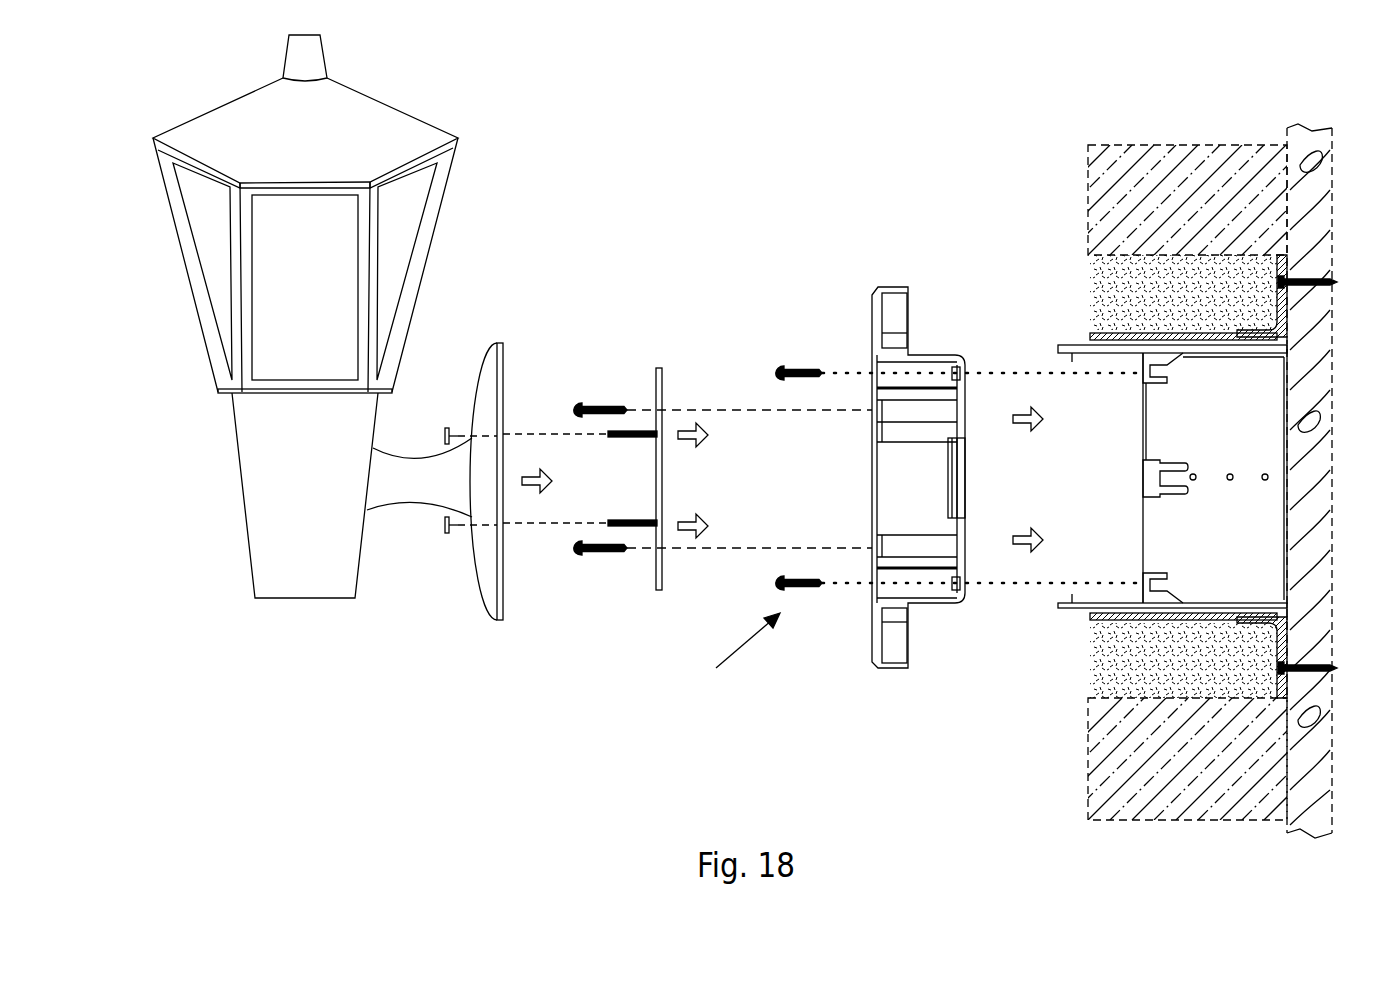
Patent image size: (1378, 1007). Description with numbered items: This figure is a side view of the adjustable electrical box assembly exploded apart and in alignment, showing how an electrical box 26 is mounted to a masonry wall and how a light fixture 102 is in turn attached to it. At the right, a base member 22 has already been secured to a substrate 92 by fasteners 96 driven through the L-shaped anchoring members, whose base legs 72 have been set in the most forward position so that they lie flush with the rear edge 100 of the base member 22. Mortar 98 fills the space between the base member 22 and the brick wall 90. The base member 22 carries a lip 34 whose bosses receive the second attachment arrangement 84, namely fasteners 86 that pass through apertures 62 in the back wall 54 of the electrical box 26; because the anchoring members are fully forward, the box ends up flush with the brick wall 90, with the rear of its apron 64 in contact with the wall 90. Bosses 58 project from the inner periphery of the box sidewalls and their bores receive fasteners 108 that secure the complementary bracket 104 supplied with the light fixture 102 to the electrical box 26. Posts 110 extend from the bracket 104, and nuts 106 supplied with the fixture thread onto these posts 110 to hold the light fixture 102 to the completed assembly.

The base member 22 is at (1172, 476).
The electrical box 26 is at (918, 416).
The lip 34 is at (1070, 353).
The back wall 54 is at (967, 553).
The bosses 58 is at (905, 547).
The apertures 62 is at (970, 372).
The apron 64 is at (895, 288).
The base leg 72 is at (1230, 613).
The second attachment arrangement 84 is at (736, 651).
The fasteners 86 is at (793, 363).
The brick wall 90 is at (1088, 200).
The substrate 92 is at (1302, 147).
The fasteners 96 is at (1303, 280).
The mortar 98 is at (1117, 290).
The rear edge 100 is at (1283, 490).
The light fixture 102 is at (393, 107).
The bracket 104 is at (660, 590).
The nuts 106 is at (447, 408).
The fasteners 108 is at (598, 397).
The posts 110 is at (635, 520).